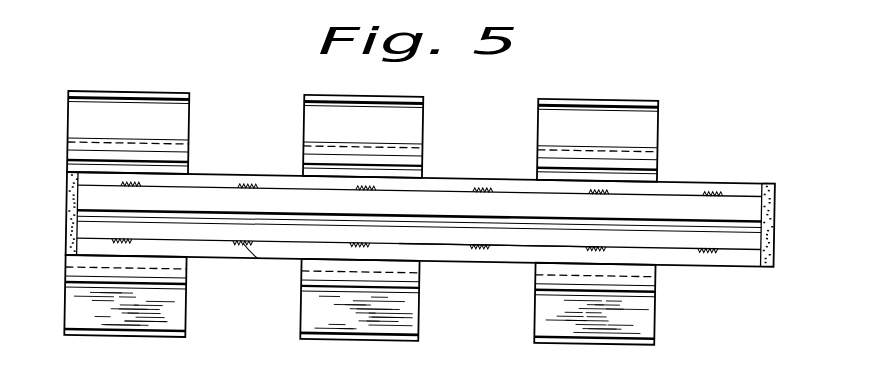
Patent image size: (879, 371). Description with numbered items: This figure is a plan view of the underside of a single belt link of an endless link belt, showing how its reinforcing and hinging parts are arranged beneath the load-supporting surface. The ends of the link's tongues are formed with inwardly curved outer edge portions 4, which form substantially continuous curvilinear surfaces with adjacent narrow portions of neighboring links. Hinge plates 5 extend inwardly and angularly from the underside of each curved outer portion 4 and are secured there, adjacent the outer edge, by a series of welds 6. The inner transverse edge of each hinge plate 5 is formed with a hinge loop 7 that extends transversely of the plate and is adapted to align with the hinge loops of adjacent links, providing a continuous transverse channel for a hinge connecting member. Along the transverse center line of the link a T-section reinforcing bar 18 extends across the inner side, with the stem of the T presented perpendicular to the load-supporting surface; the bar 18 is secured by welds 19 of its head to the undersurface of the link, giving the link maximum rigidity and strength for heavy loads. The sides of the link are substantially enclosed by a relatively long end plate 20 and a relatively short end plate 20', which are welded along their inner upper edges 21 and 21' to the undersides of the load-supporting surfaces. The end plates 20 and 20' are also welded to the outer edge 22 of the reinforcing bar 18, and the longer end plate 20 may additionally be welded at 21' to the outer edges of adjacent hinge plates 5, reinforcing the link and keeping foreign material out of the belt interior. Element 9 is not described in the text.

The curved outer edge portion 4 is at (303, 96).
The hinge plate 5 is at (537, 319).
The welds 6 is at (352, 332).
The hinge loop 7 is at (303, 150).
The core tube 9 is at (553, 181).
The T-section reinforcing bar 18 is at (520, 239).
The welds 19 is at (360, 243).
The long end plate 20 is at (55, 173).
The short end plate 20' is at (778, 189).
The inner upper edge 21 is at (54, 248).
The inner upper edge 21' is at (756, 259).
The outer edge 22 is at (78, 204).